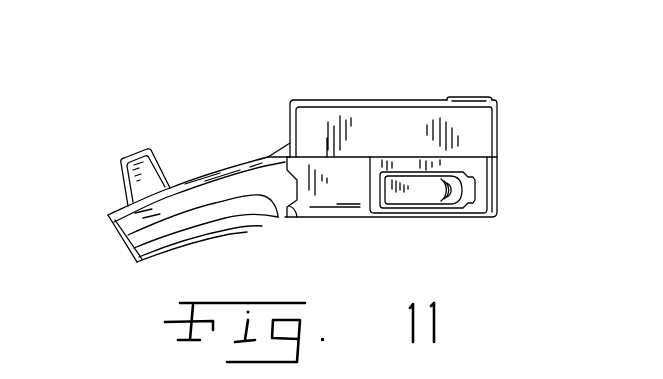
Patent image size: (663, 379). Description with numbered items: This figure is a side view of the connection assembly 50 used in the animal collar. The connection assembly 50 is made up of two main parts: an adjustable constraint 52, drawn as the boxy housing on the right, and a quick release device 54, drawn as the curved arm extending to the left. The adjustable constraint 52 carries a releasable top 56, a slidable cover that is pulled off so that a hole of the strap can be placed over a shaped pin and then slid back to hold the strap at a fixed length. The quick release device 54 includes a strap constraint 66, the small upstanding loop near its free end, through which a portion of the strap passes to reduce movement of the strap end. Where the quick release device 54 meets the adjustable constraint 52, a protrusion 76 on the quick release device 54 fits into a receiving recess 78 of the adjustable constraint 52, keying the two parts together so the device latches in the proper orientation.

The connection assembly 50 is at (271, 137).
The adjustable constraint 52 is at (391, 136).
The quick release device 54 is at (159, 169).
The releasable top 56 is at (430, 100).
The strap constraint 66 is at (118, 177).
The protrusion 76 is at (340, 208).
The receiving recess 78 is at (297, 213).